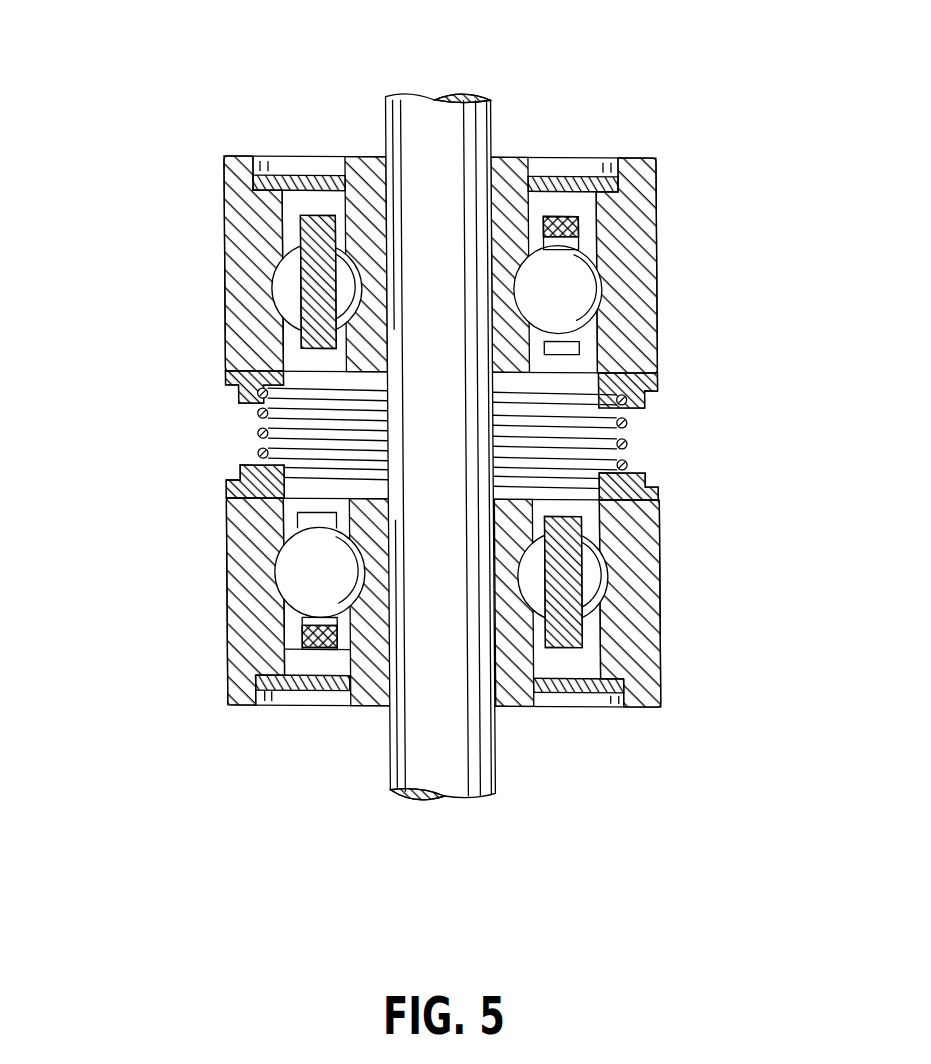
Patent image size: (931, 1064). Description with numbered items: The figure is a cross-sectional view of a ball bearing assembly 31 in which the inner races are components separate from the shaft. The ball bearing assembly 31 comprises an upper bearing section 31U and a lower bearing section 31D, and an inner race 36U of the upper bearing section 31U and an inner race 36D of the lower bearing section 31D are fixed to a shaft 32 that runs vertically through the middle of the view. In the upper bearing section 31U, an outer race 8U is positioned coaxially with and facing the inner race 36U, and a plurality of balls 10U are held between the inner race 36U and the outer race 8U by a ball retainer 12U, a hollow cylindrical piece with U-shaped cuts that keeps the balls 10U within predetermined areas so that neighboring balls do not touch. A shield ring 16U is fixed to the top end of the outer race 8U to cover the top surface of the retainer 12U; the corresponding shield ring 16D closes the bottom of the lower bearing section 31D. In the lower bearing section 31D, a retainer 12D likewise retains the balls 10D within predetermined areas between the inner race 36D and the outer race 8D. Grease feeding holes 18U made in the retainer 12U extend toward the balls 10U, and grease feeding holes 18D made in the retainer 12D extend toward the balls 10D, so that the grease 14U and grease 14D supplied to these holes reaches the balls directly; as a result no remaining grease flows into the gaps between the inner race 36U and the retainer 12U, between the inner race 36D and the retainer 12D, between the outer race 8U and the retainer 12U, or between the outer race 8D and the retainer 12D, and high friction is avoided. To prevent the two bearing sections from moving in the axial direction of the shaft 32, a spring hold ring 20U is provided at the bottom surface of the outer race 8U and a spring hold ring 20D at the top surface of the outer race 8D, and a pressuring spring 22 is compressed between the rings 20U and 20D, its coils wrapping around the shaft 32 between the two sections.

The outer race 8U is at (623, 328).
The outer race 8D is at (245, 523).
The balls 10U is at (565, 292).
The balls 10D is at (315, 575).
The ball retainer 12U is at (578, 234).
The retainer 12D is at (573, 585).
The grease 14U is at (556, 237).
The grease 14D is at (223, 661).
The shield ring 16U is at (568, 177).
The lower seal 16D is at (293, 692).
The grease feeding holes 18U is at (568, 225).
The grease feeding holes 18D is at (265, 672).
The spring hold ring 20U is at (491, 397).
The spring hold ring 20D is at (655, 488).
The pressuring spring 22 is at (627, 442).
The ball bearing assembly 31 is at (438, 450).
The upper bearing section 31U is at (468, 211).
The lower bearing section 31D is at (395, 677).
The shaft 32 is at (453, 450).
The inner race 36U is at (507, 168).
The inner race 36D is at (370, 692).